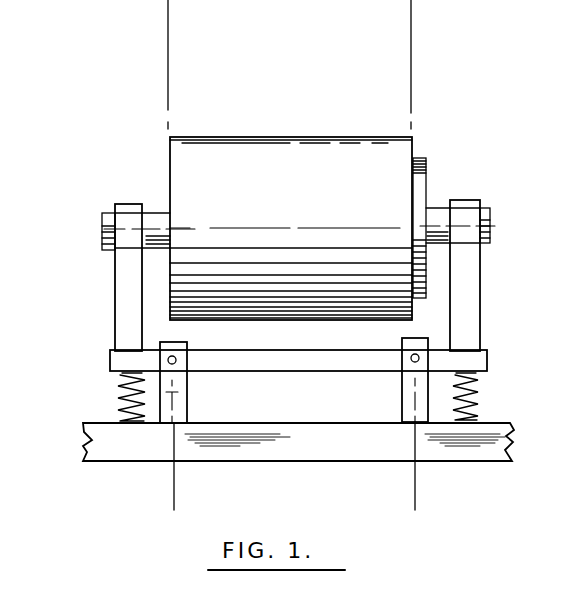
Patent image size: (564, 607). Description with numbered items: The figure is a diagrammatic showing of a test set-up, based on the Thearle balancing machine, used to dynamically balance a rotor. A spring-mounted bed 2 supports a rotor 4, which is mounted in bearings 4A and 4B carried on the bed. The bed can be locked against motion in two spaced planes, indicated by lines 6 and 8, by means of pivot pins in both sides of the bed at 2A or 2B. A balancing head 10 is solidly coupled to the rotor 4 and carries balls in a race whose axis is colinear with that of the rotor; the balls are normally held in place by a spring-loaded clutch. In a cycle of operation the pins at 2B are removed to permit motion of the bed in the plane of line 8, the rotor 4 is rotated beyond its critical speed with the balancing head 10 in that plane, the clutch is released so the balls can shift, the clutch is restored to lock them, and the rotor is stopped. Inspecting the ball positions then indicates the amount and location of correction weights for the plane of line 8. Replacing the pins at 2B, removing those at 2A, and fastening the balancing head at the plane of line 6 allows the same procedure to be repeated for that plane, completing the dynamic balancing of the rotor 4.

The spring-mounted bed 2 is at (118, 388).
The pivot pins 2A is at (177, 364).
The pivot pins 2B is at (411, 362).
The rotor 4 is at (307, 223).
The bearing 4A is at (124, 214).
The bearing 4B is at (470, 216).
The line indicating plane 6 is at (168, 45).
The line indicating plane 8 is at (411, 40).
The balancing head 10 is at (428, 186).